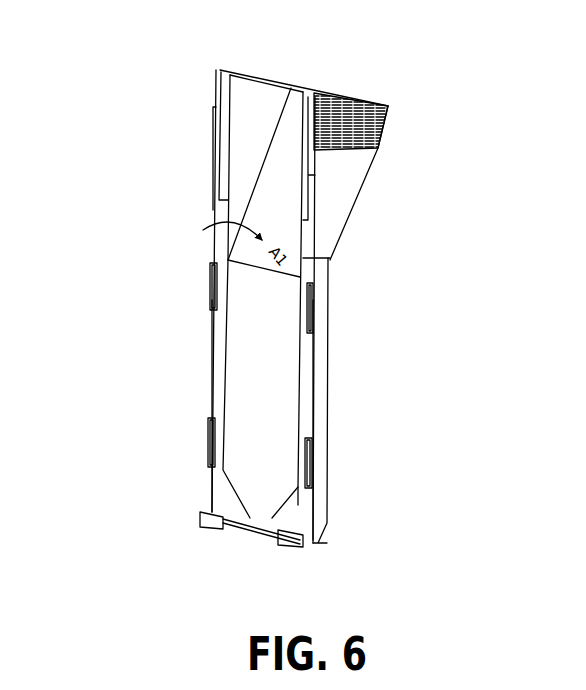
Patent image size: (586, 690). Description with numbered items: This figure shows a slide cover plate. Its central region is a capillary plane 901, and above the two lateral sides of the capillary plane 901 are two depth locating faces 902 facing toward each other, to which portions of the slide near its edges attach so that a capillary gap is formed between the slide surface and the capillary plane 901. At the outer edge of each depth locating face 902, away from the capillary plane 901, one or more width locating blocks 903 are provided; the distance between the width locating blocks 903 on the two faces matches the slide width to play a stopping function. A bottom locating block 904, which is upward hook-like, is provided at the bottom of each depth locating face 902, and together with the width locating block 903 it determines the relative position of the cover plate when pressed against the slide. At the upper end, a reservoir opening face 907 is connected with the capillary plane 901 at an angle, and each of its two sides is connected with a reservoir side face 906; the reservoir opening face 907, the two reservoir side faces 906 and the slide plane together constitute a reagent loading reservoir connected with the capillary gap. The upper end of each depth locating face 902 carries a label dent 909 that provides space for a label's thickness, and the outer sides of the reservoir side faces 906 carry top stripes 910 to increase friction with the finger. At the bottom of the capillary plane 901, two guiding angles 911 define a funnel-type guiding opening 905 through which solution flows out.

The capillary plane 901 is at (287, 405).
The depth locating face 902 is at (223, 342).
The width locating block 903 is at (212, 443).
The bottom locating block 904 is at (198, 528).
The funnel-type guiding opening 905 is at (260, 530).
The reservoir side face 906 is at (257, 107).
The reservoir opening face 907 is at (281, 167).
The label dent 909 is at (317, 207).
The top stripes 910 is at (351, 108).
The guiding angle 911 is at (300, 505).